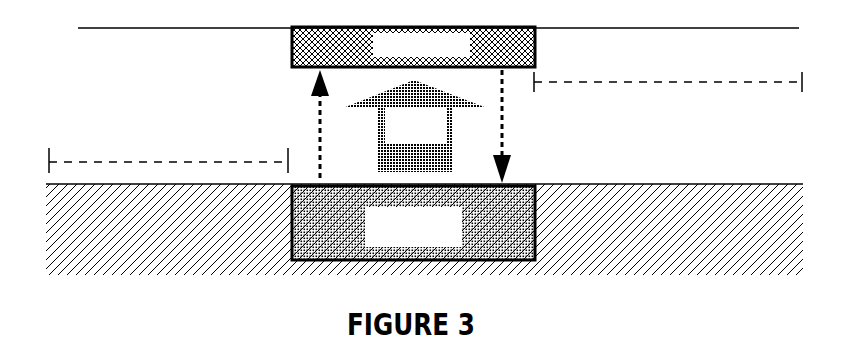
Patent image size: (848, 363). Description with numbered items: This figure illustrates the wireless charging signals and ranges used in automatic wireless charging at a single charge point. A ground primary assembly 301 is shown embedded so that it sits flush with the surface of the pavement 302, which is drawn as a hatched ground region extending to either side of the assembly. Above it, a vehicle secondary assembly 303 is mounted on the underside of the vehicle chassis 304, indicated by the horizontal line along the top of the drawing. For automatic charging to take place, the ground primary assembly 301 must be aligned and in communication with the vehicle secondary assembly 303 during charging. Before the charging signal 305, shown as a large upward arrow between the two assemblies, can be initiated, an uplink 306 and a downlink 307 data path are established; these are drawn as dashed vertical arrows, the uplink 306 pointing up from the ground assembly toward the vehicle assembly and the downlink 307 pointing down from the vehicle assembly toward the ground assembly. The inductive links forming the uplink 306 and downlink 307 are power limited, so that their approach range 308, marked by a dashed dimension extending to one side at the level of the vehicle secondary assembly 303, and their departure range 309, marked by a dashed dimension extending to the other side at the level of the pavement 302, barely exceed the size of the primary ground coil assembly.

The ground primary assembly 301 is at (413, 223).
The pavement 302 is at (424, 216).
The vehicle secondary assembly 303 is at (413, 47).
The vehicle chassis 304 is at (416, 28).
The charging signal 305 is at (415, 126).
The uplink 306 is at (300, 124).
The downlink 307 is at (520, 126).
The approach range 308 is at (668, 90).
The departure range 309 is at (168, 152).